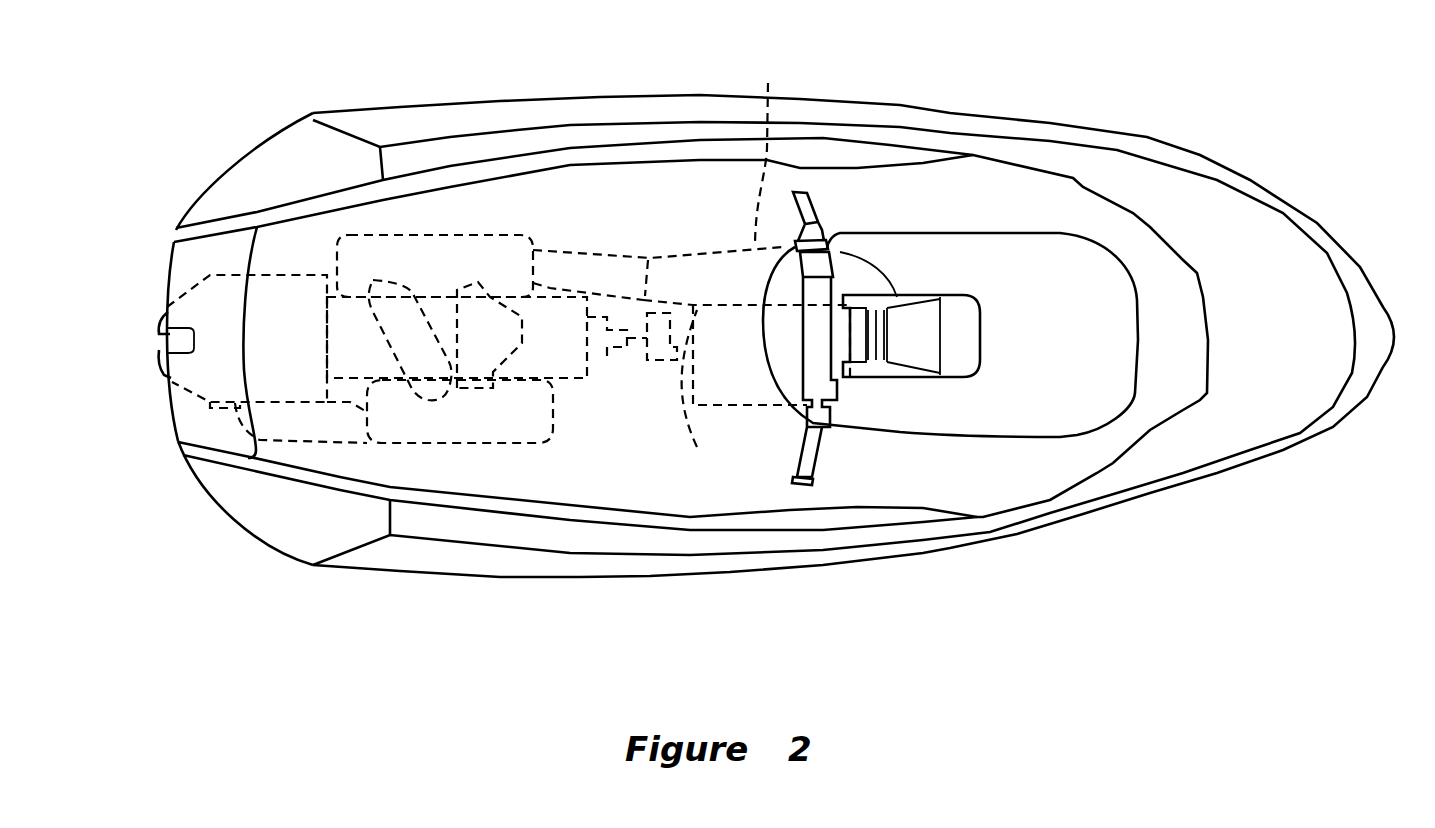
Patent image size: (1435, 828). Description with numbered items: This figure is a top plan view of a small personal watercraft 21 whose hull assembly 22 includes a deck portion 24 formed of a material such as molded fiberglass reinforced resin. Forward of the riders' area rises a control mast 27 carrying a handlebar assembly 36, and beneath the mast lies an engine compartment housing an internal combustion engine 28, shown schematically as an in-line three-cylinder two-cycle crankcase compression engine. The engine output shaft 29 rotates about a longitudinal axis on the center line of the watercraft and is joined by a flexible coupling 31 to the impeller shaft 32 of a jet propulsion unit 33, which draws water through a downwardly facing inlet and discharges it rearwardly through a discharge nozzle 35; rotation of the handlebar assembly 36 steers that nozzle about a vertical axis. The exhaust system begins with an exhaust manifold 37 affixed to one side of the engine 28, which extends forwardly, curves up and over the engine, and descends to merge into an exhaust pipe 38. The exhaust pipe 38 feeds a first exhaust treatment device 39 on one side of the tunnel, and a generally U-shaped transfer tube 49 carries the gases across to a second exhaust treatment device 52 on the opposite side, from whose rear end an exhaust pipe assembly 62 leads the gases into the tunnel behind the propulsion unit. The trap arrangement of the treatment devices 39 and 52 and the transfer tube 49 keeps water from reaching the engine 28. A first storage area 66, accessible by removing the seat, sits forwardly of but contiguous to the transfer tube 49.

The personal watercraft 21 is at (1150, 133).
The hull assembly 22 is at (1305, 297).
The deck portion 24 is at (1243, 230).
The control mast 27 is at (822, 214).
The internal combustion engine 28 is at (742, 410).
The output shaft 29 is at (697, 447).
The flexible coupling 31 is at (663, 310).
The impeller shaft 32 is at (626, 345).
The jet propulsion unit 33 is at (588, 388).
The discharge nozzle 35 is at (153, 374).
The handlebar assembly 36 is at (823, 293).
The exhaust manifold 37 is at (772, 152).
The exhaust pipe 38 is at (599, 250).
The first exhaust treatment device 39 is at (503, 232).
The transfer tube 49 is at (378, 346).
The second exhaust treatment device 52 is at (490, 447).
The exhaust pipe assembly 62 is at (302, 445).
The first storage area 66 is at (527, 342).